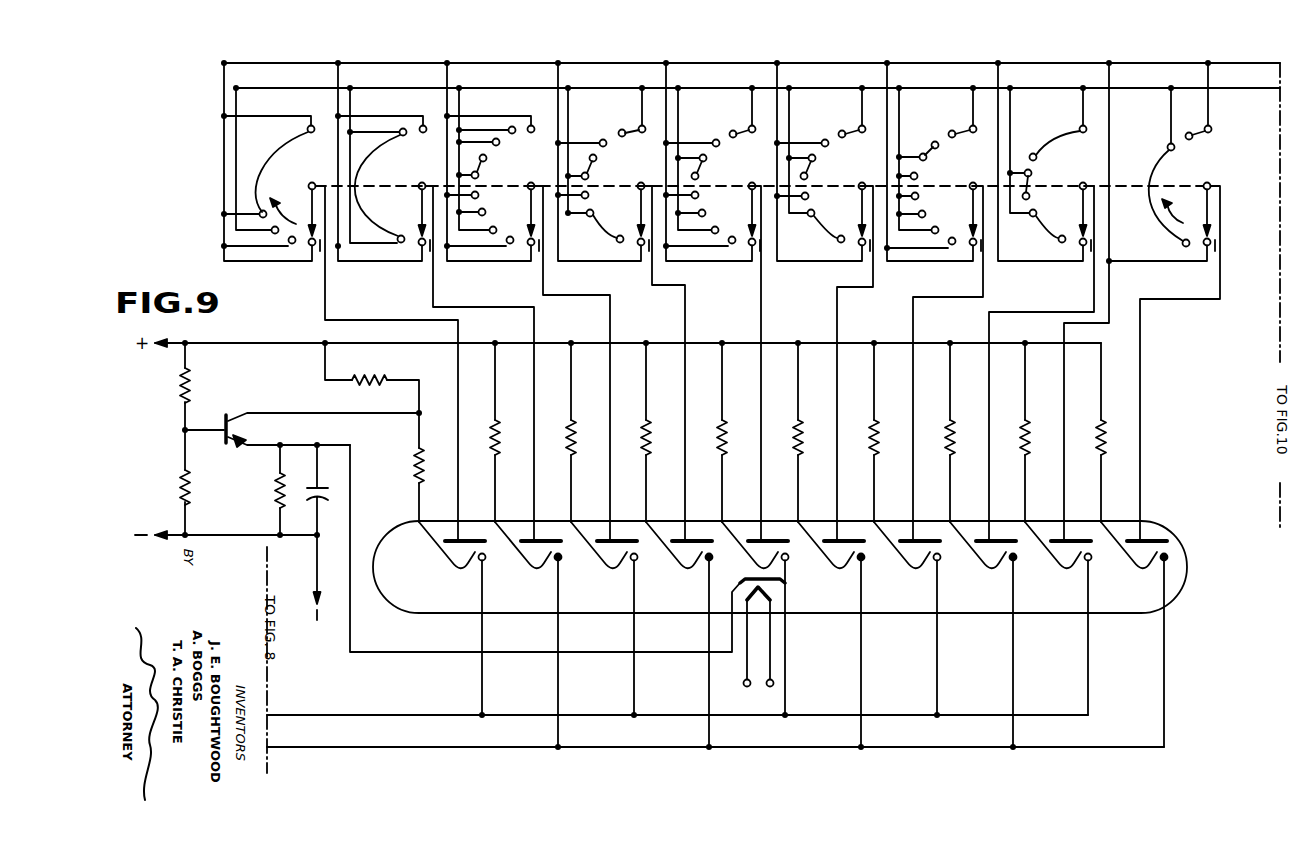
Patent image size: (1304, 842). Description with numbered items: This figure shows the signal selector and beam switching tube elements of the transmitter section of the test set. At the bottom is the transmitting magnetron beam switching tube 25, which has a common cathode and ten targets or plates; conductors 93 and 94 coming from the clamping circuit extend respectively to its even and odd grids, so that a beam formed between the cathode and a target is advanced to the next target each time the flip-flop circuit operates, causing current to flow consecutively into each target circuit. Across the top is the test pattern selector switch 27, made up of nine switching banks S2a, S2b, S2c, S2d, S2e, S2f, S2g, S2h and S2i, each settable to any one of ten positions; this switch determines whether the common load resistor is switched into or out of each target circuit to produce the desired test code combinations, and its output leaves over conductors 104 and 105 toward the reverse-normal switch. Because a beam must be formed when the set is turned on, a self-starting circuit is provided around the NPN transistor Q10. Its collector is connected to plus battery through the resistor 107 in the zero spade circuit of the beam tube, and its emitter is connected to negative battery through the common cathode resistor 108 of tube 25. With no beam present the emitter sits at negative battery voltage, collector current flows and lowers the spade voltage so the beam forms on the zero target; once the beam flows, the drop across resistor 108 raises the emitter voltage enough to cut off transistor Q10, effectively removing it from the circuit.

The test pattern selector switch 27 is at (552, 55).
The transmitting magnetron beam switching tube 25 is at (396, 521).
The conductor 93 is at (335, 715).
The conductor 94 is at (335, 747).
The conductor 104 is at (1280, 63).
The conductor 105 is at (1280, 88).
The resistor 107 is at (368, 380).
The common cathode resistor 108 is at (276, 491).
The NPN transistor Q10 is at (233, 412).
The switching bank S2a is at (339, 299).
The switching bank S2b is at (434, 299).
The switching bank S2c is at (527, 299).
The switching bank S2d is at (620, 299).
The switching bank S2e is at (712, 299).
The switching bank S2f is at (823, 299).
The switching bank S2g is at (933, 299).
The switching bank S2h is at (1041, 299).
The switching bank S2i is at (1142, 299).